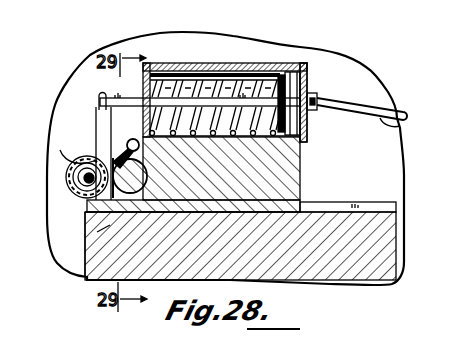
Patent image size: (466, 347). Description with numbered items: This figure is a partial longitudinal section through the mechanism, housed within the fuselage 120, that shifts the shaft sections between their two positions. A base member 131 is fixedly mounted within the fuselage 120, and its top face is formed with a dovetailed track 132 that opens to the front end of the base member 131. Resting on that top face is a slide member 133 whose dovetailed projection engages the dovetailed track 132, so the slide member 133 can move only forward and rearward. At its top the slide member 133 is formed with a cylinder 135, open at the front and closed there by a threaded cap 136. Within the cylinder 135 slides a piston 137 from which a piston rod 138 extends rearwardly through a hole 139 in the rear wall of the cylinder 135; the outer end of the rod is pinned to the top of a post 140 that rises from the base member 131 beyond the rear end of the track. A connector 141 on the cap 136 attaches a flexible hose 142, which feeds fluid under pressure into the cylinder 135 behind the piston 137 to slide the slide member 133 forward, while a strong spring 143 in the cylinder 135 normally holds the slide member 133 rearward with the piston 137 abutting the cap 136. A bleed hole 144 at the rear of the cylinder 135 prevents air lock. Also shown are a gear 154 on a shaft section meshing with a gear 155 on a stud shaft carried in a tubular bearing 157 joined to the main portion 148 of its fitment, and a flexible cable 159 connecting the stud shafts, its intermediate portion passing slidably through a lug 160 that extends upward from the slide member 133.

The fuselage 120 is at (376, 88).
The base member 131 is at (380, 234).
The dovetailed track 132 is at (373, 204).
The slide member 133 is at (290, 178).
The cylinder 135 is at (236, 64).
The cap 136 is at (308, 84).
The piston 137 is at (291, 65).
The piston rod 138 is at (195, 99).
The hole 139 is at (143, 98).
The post 140 is at (97, 124).
The connector 141 is at (314, 110).
The flexible hose 142 is at (397, 129).
The spring 143 is at (277, 64).
The bleed hole 144 is at (163, 63).
The main portion 148 is at (103, 230).
The gear 154 is at (107, 207).
The gear 155 is at (75, 147).
The tubular bearing 157 is at (69, 174).
The flexible cable 159 is at (73, 187).
The lug 160 is at (130, 143).